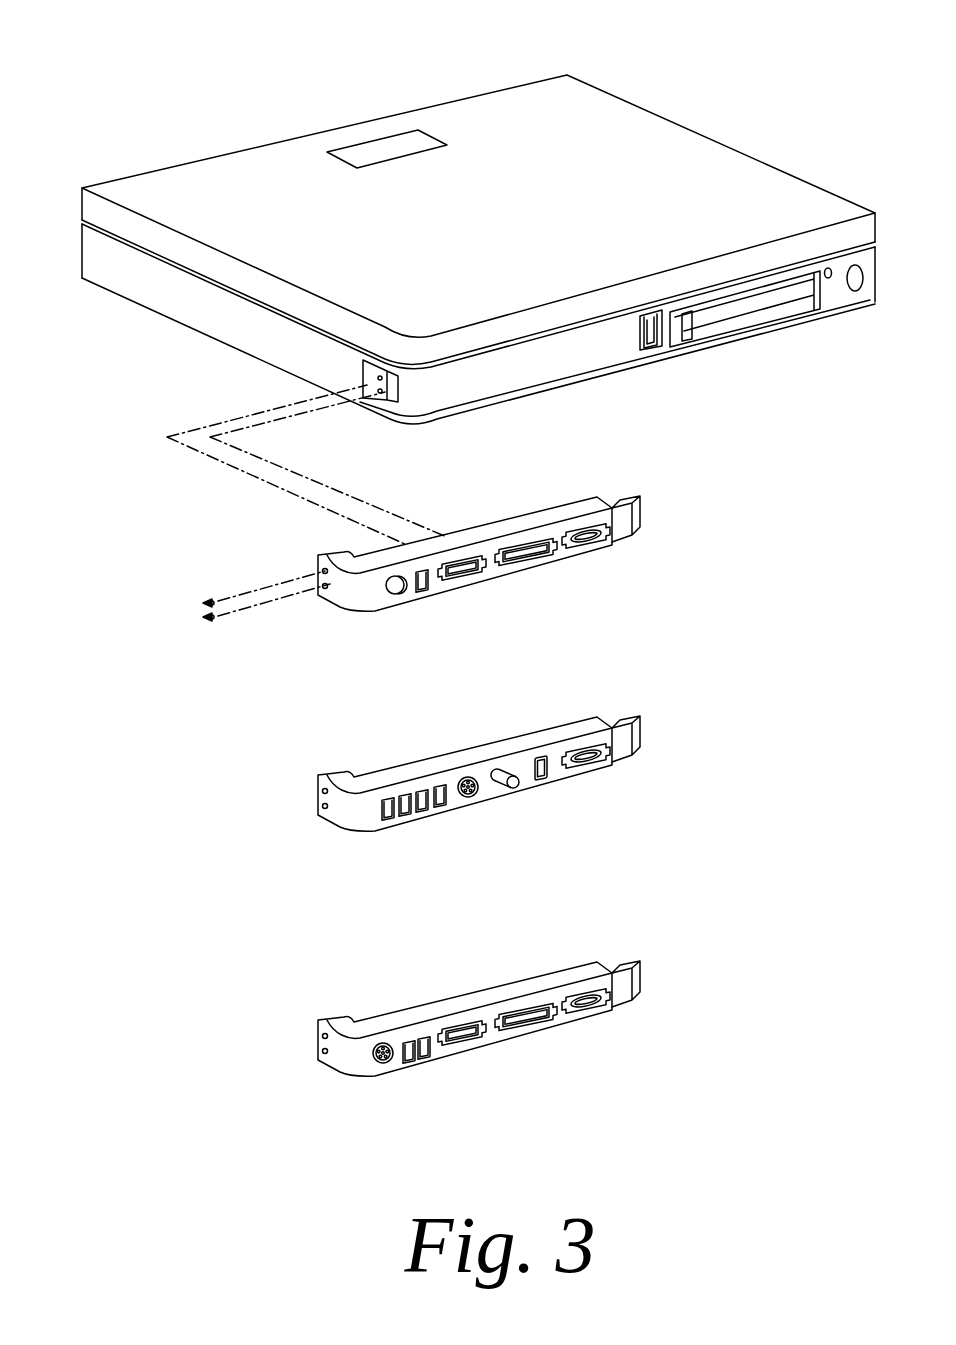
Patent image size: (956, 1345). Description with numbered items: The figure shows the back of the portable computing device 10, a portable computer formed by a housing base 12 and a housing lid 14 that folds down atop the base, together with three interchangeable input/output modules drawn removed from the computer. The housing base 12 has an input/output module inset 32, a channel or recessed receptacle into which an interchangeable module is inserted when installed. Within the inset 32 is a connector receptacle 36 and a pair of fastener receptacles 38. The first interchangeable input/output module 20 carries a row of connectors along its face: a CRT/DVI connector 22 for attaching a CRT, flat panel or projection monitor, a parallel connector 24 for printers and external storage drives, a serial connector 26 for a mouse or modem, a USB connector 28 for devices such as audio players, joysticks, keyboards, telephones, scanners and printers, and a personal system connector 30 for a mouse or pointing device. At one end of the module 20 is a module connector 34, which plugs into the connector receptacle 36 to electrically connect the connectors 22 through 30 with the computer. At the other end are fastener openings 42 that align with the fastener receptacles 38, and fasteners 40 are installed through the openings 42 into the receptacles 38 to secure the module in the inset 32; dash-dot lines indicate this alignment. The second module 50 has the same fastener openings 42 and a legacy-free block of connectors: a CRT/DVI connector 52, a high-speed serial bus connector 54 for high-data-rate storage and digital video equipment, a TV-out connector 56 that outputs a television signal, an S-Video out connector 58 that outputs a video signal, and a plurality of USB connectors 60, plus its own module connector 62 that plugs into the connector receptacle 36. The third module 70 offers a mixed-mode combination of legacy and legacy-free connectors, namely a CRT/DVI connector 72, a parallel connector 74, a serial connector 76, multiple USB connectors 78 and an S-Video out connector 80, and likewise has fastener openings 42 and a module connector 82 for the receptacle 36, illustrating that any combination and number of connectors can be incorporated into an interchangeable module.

The computing device 10 is at (737, 75).
The housing base 12 is at (160, 316).
The housing lid 14 is at (222, 152).
The interchangeable input/output module 20 is at (357, 593).
The CRT/DVI connector 22 is at (588, 545).
The parallel connector 24 is at (528, 560).
The serial connector 26 is at (467, 577).
The USB connector 28 is at (425, 594).
The PS/2 connector 30 is at (397, 597).
The input/output module inset 32 is at (532, 390).
The module connector 34 is at (631, 503).
The connector receptacle 36 is at (648, 350).
The fastener receptacles 38 is at (373, 358).
The fasteners 40 is at (203, 600).
The fastener openings 42 is at (320, 556).
The interchangeable input/output module 50 is at (357, 813).
The CRT/DVI connector 52 is at (601, 765).
The IEEE 1394 connector 54 is at (547, 779).
The TV-out connector 56 is at (517, 790).
The S-Video out connector 58 is at (473, 798).
The USB connectors 60 is at (390, 819).
The module connector 62 is at (631, 723).
The interchangeable input/output module 70 is at (357, 1058).
The CRT/DVI connector 72 is at (588, 1010).
The parallel connector 74 is at (528, 1025).
The serial connector 76 is at (467, 1042).
The USB connectors 78 is at (409, 1063).
The S-Video out connector 80 is at (385, 1064).
The module connector 82 is at (631, 968).